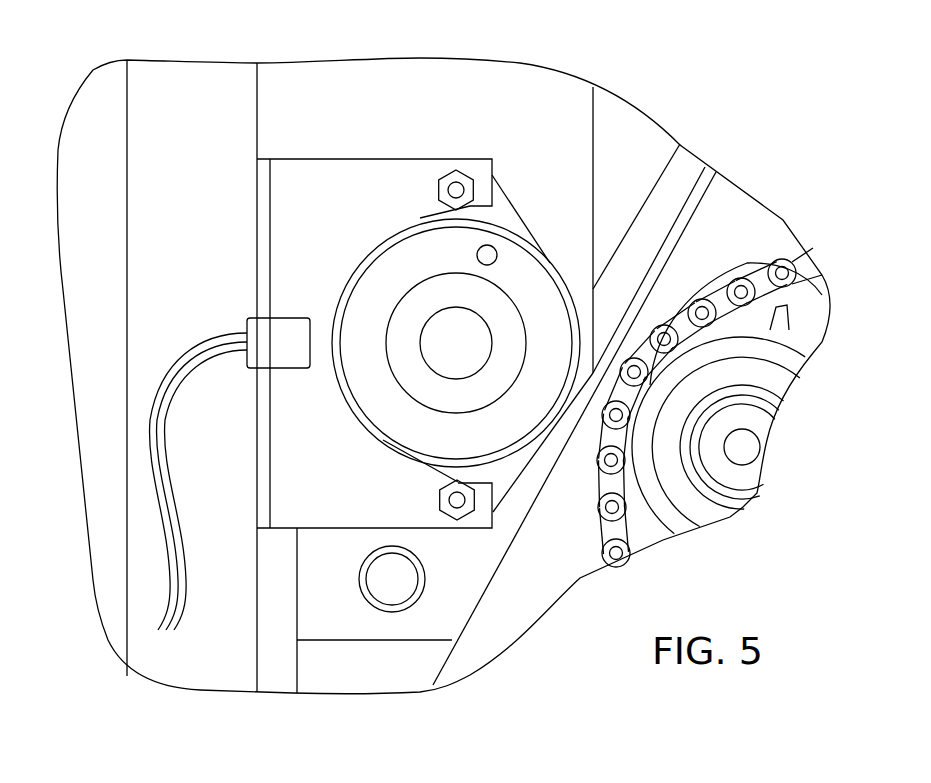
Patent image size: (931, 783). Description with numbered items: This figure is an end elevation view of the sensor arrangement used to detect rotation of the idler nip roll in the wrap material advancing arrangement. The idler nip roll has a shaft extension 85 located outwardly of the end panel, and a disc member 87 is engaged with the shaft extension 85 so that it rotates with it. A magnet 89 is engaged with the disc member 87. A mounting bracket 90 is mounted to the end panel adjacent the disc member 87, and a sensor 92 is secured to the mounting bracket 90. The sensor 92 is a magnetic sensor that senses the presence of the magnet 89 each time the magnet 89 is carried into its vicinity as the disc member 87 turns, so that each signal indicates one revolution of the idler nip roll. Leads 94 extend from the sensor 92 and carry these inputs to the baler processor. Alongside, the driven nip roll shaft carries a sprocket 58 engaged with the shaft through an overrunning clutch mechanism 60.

The sprocket 58 is at (793, 357).
The overrunning clutch mechanism 60 is at (786, 408).
The shaft extension 85 is at (468, 330).
The disc member 87 is at (513, 232).
The magnet 89 is at (477, 255).
The mounting bracket 90 is at (365, 158).
The sensor 92 is at (247, 318).
The leads 94 is at (157, 405).